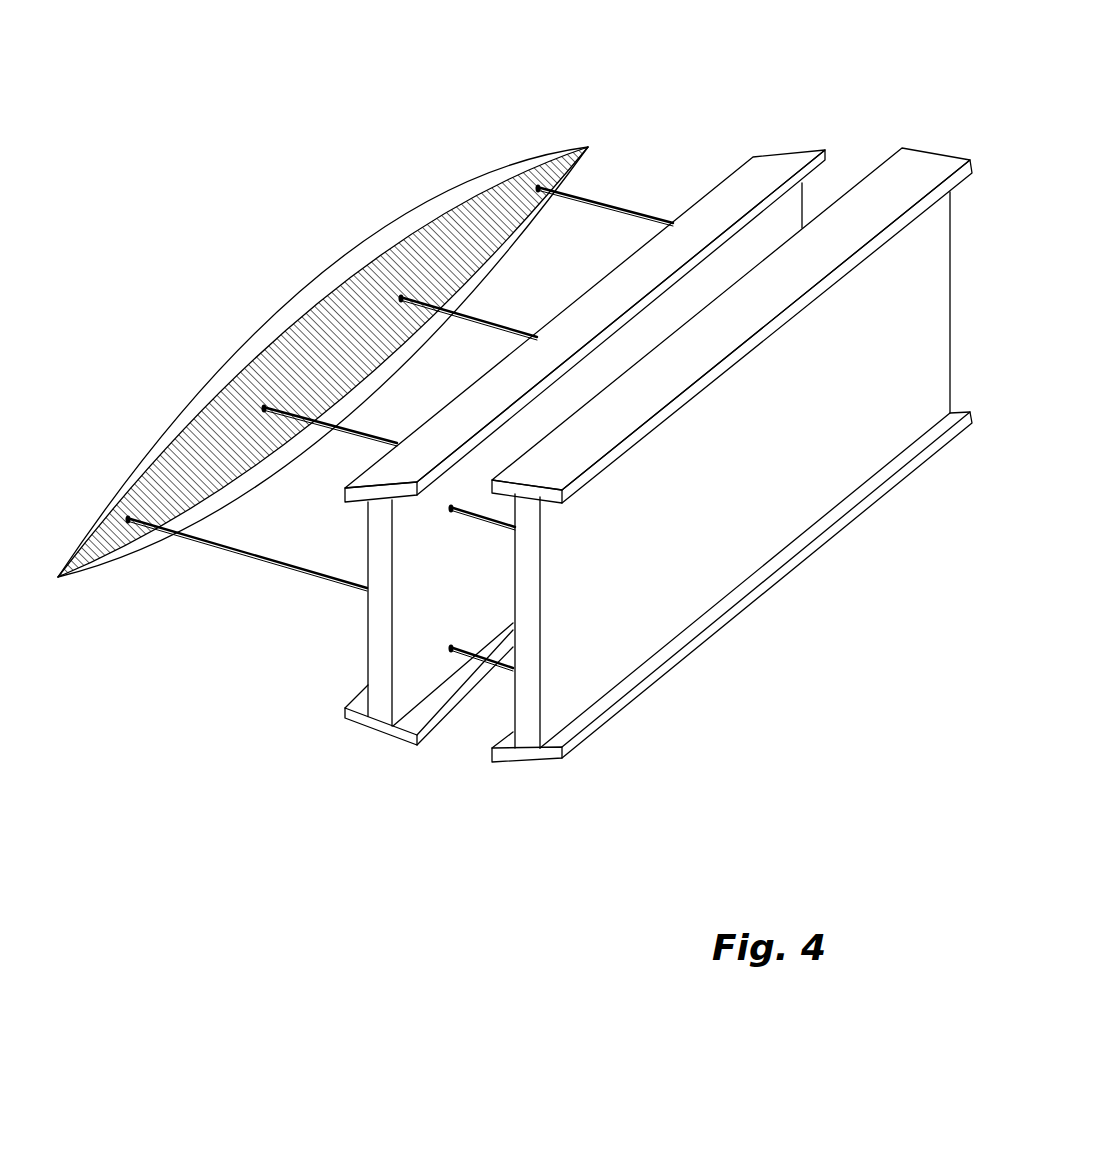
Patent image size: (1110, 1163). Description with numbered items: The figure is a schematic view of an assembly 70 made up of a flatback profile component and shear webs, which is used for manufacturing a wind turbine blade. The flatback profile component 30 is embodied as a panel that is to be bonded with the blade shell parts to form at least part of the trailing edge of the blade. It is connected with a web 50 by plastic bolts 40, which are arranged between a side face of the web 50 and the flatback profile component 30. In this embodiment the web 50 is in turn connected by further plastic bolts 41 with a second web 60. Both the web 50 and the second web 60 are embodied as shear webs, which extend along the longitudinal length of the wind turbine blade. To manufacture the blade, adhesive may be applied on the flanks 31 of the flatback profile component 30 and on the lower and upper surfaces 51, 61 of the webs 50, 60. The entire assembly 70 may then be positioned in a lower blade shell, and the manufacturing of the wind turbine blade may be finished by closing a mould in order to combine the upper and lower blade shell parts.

The flatback profile component 30 is at (353, 311).
The flanks 31 is at (270, 322).
The plastic bolts 40 is at (600, 200).
The plastic bolts 41 is at (488, 518).
The web 50 is at (555, 422).
The lower and upper surfaces 51 is at (752, 180).
The second web 60 is at (732, 388).
The lower and upper surfaces 61 is at (913, 170).
The assembly 70 is at (255, 862).